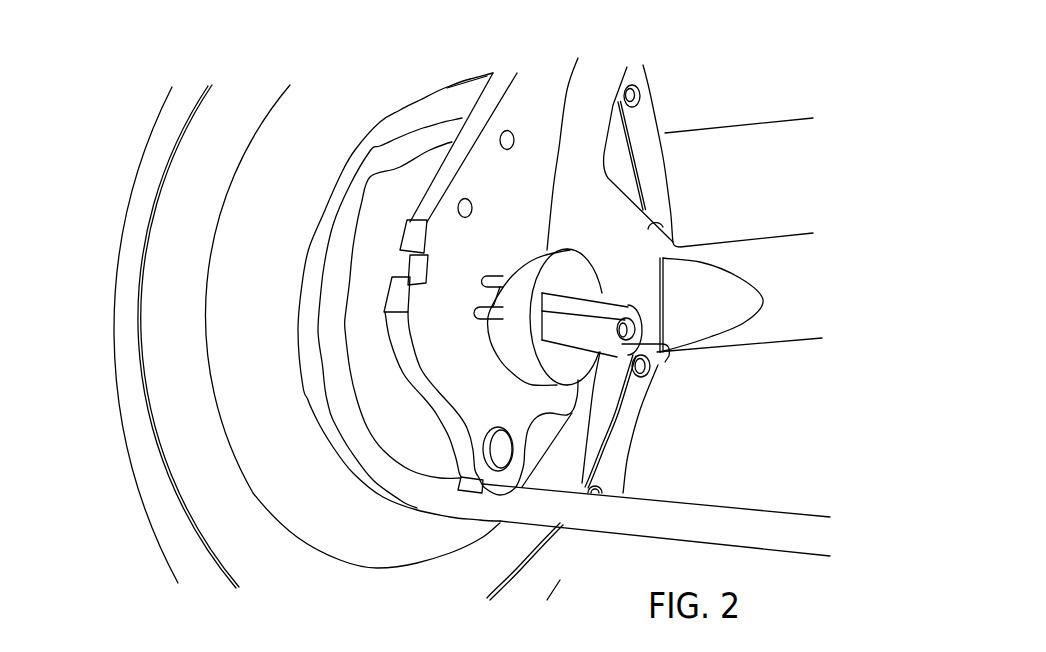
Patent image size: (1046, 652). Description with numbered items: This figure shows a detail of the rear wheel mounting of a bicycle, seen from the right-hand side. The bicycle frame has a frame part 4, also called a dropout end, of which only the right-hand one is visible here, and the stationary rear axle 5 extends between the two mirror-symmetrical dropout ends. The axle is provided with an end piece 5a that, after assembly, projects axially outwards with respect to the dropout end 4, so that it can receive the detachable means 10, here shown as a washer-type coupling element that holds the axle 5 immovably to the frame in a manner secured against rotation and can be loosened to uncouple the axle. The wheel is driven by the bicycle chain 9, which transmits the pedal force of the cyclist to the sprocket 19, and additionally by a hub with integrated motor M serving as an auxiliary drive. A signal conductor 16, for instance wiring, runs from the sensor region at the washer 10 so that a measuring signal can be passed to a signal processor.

The hub motor M is at (295, 468).
The frame part (dropout end) 4 is at (438, 317).
The sprocket 19 is at (430, 158).
The detachable means (washer) 10 is at (527, 298).
The axle end piece 5a is at (578, 323).
The signal conductor 16 is at (566, 91).
The rear axle 5 is at (637, 357).
The bicycle chain 9 is at (778, 508).